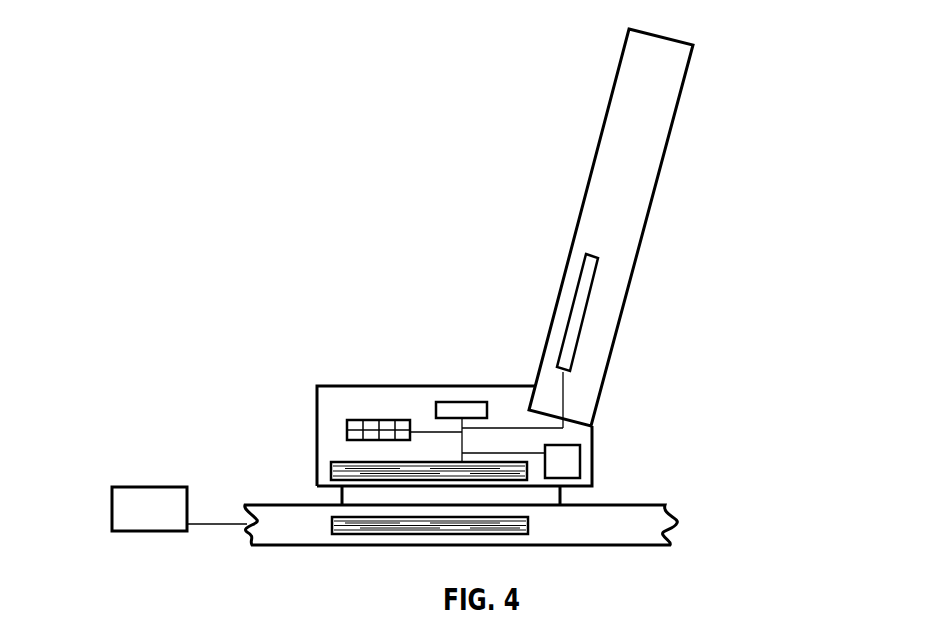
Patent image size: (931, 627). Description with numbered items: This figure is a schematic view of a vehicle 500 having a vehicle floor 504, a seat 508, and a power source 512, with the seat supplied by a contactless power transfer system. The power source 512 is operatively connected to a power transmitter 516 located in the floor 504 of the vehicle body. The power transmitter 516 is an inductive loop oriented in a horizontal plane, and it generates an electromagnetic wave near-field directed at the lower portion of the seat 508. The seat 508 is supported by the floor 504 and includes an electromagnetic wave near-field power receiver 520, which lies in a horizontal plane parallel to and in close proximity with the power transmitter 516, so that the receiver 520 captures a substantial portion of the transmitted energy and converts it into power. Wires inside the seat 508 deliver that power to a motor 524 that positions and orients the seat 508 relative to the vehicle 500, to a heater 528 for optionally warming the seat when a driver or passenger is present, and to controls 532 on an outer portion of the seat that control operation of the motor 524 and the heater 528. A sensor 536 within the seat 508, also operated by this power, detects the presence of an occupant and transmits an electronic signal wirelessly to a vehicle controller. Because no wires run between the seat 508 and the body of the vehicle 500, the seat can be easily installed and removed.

The vehicle 500 is at (255, 117).
The vehicle floor 504 is at (632, 525).
The seat 508 is at (643, 398).
The power source 512 is at (150, 487).
The power transmitter 516 is at (383, 533).
The power receiver 520 is at (340, 462).
The motor 524 is at (579, 463).
The heater 528 is at (570, 312).
The controls 532 is at (380, 420).
The sensor 536 is at (467, 402).